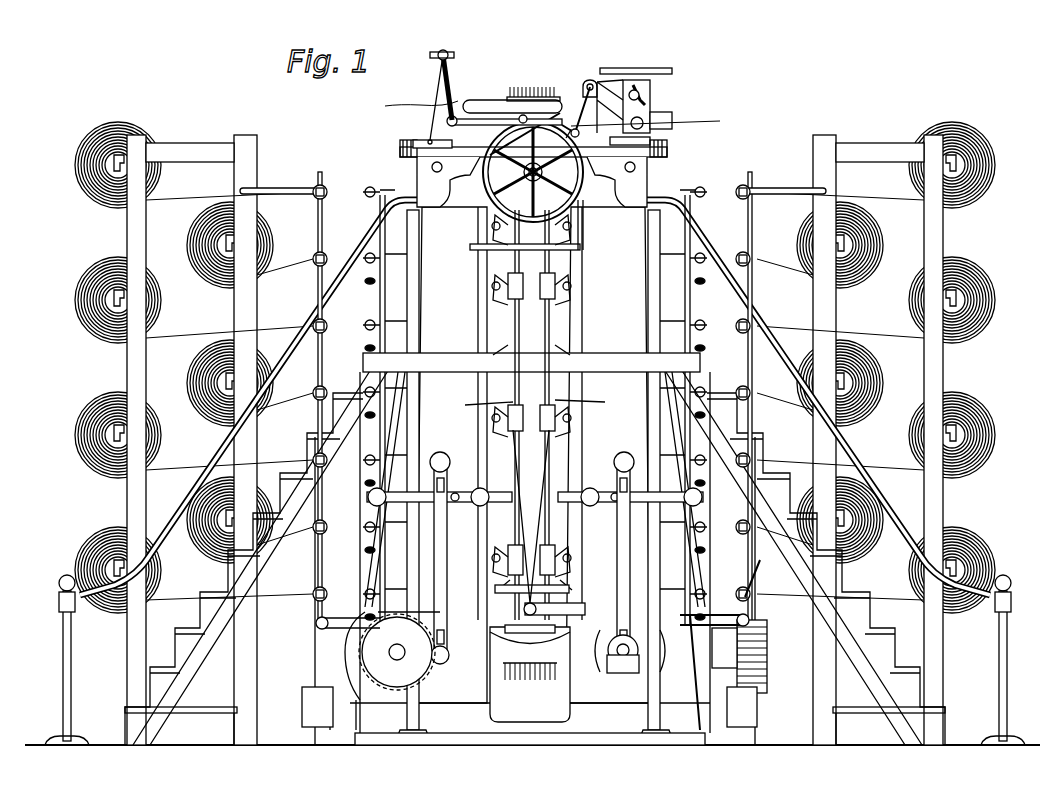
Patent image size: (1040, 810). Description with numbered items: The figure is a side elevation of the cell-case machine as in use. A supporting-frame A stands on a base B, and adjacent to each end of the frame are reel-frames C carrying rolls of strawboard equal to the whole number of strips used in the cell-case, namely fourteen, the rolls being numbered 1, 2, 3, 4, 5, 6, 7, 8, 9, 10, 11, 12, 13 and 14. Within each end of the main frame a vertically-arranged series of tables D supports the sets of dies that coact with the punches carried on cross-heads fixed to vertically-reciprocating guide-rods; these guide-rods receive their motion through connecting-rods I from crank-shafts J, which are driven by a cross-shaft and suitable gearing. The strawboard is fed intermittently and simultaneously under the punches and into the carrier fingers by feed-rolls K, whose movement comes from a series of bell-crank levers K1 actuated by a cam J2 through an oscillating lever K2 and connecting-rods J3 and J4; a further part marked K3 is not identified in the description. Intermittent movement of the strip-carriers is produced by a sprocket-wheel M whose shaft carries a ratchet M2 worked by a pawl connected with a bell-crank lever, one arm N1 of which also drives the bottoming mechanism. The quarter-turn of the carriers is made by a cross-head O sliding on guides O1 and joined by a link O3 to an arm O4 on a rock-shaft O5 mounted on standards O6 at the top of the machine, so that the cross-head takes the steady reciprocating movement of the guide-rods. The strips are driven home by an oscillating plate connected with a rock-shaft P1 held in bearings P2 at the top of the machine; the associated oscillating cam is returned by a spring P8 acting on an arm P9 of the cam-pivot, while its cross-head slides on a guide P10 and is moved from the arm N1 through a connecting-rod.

The roll of strawboard 1 is at (750, 591).
The roll of strawboard 2 is at (736, 524).
The roll of strawboard 3 is at (750, 459).
The roll of strawboard 4 is at (750, 392).
The roll of strawboard 5 is at (750, 325).
The roll of strawboard 6 is at (750, 257).
The roll of strawboard 7 is at (737, 189).
The roll of strawboard 8 is at (328, 190).
The roll of strawboard 9 is at (327, 257).
The roll of strawboard 10 is at (327, 325).
The roll of strawboard 11 is at (327, 392).
The roll of strawboard 12 is at (312, 458).
The roll of strawboard 13 is at (327, 525).
The roll of strawboard 14 is at (327, 592).
The supporting-frame A is at (530, 455).
The base B is at (530, 729).
The reel-frames C is at (940, 505).
The tables D is at (531, 253).
The connecting-rods I is at (618, 560).
The crank-shafts J is at (440, 660).
The cam J2 is at (612, 669).
The connecting-rod J3 is at (517, 528).
The connecting-rod J4 is at (528, 404).
The feed-rolls K is at (526, 410).
The bell-crank levers K1 is at (545, 467).
The oscillating lever K2 is at (562, 600).
The slide block K3 is at (493, 560).
The sprocket-wheel M is at (533, 173).
The ratchet M2 is at (627, 173).
The arm of bell-crank N1 is at (540, 151).
The cross-head O is at (524, 114).
The guides O1 is at (483, 102).
The link O3 is at (415, 105).
The arm O4 is at (455, 80).
The rock-shaft O5 is at (437, 56).
The standards O6 is at (448, 51).
The rock-shaft P1 is at (645, 127).
The bearings P2 is at (639, 139).
The spring P8 is at (645, 106).
The arm P9 is at (634, 100).
The guide P10 is at (668, 116).